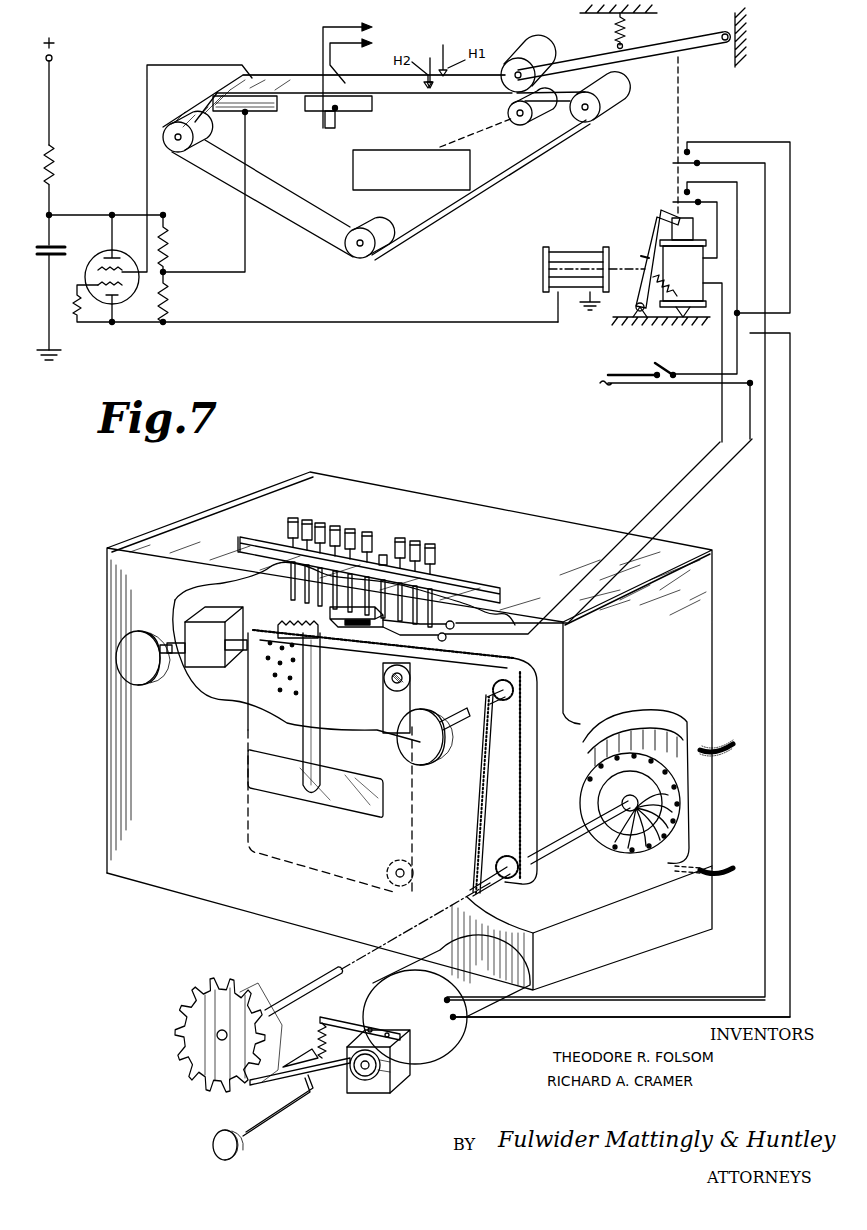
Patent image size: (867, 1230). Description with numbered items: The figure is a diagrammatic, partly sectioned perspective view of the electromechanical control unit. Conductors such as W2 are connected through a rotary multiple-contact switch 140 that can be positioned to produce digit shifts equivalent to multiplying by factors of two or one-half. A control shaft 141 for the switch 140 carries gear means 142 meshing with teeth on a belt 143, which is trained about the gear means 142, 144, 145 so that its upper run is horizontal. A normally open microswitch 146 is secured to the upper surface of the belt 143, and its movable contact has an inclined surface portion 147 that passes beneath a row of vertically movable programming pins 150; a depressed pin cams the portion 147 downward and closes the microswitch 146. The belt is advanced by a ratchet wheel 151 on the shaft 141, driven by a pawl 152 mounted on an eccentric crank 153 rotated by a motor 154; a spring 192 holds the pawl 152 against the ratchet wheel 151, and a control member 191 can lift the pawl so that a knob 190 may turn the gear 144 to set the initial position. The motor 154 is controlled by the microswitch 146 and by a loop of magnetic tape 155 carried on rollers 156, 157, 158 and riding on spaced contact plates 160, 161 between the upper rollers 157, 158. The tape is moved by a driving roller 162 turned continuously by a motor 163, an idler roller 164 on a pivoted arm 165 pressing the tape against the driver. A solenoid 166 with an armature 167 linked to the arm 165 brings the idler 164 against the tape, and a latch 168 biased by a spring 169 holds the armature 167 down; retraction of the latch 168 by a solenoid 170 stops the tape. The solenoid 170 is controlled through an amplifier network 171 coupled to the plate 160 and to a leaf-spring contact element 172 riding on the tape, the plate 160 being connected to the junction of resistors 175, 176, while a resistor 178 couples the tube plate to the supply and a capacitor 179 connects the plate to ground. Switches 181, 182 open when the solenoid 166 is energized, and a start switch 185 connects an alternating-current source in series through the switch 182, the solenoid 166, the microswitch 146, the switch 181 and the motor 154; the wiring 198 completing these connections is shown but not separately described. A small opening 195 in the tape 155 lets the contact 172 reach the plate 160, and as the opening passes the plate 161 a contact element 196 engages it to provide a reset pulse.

The rotary multiple-contact switch 140 is at (620, 835).
The control shaft 141 is at (563, 850).
The gear means 142 is at (505, 856).
The belt 143 is at (538, 762).
The gear means 144 is at (505, 704).
The gear means 145 is at (272, 620).
The microswitch 146 is at (322, 606).
The inclined surface portion 147 is at (380, 628).
The vertically movable pins 150 is at (386, 526).
The ratchet wheel 151 is at (255, 992).
The pawl 152 is at (257, 1086).
The eccentric crank 153 is at (365, 1085).
The motor 154 is at (442, 1050).
The loop of magnetic tape 155 is at (313, 228).
The roller 156 is at (366, 257).
The roller 157 is at (170, 150).
The roller 158 is at (585, 122).
The contact plate 160 is at (261, 113).
The contact plate 161 is at (317, 112).
The driving roller 162 is at (508, 113).
The motor 163 is at (367, 150).
The idler roller 164 is at (540, 52).
The pivoted arm 165 is at (627, 38).
The solenoid 166 is at (700, 275).
The armature 167 is at (650, 212).
The latch element 168 is at (645, 238).
The spring 169 is at (636, 315).
The solenoid 170 is at (548, 290).
The amplifier network 171 is at (92, 241).
The contact element 172 is at (270, 87).
The resistor 175 is at (170, 238).
The resistor 176 is at (170, 302).
The resistor 178 is at (65, 156).
The capacitor 179 is at (42, 256).
The switch 181 is at (683, 152).
The switch 182 is at (683, 192).
The start switch 185 is at (666, 362).
The knob 190 is at (418, 752).
The control member 191 is at (263, 1122).
The spring 192 is at (324, 1017).
The small opening 195 is at (300, 86).
The contact element 196 is at (367, 74).
The wires 198 is at (540, 552).
The conductor W2 is at (688, 768).